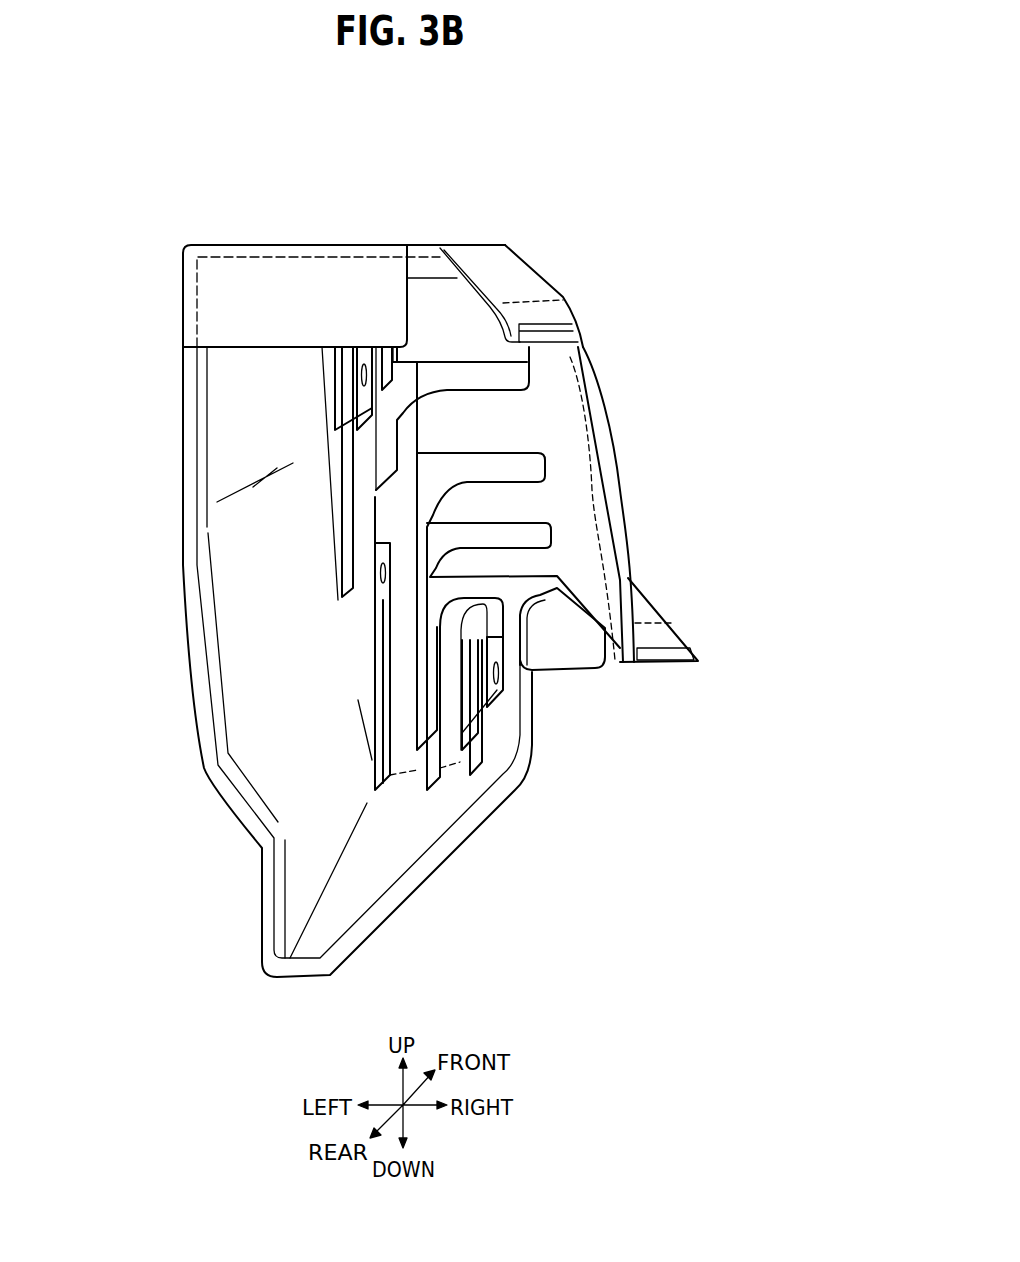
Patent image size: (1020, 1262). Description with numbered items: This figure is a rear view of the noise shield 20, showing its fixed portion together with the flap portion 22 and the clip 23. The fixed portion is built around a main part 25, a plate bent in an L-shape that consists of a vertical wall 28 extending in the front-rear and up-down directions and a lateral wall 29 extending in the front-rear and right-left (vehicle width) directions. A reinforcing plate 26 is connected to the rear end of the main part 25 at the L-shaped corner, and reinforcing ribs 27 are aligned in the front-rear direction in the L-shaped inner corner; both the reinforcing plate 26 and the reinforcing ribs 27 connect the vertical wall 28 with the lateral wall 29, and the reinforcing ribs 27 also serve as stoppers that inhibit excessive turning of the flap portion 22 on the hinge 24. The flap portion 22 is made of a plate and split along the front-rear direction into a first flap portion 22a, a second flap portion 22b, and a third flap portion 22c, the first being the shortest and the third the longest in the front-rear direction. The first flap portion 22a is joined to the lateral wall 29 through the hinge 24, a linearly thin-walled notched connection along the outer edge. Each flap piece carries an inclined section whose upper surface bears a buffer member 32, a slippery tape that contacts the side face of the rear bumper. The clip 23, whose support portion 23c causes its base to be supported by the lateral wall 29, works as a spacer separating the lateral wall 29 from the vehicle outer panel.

The noise shield 20 is at (521, 214).
The flap portion 22 is at (508, 277).
The first flap portion 22a is at (495, 296).
The second flap portion 22b is at (608, 469).
The third flap portion 22c is at (645, 612).
The clip 23 is at (365, 399).
The support portion 23c is at (430, 527).
The hinge 24 is at (466, 243).
The main part 25 is at (172, 151).
The reinforcing plate 26 is at (282, 313).
The reinforcing rib 27 is at (417, 377).
The vertical wall 28 is at (183, 453).
The lateral wall 29 is at (287, 245).
The buffer member 32 is at (567, 330).